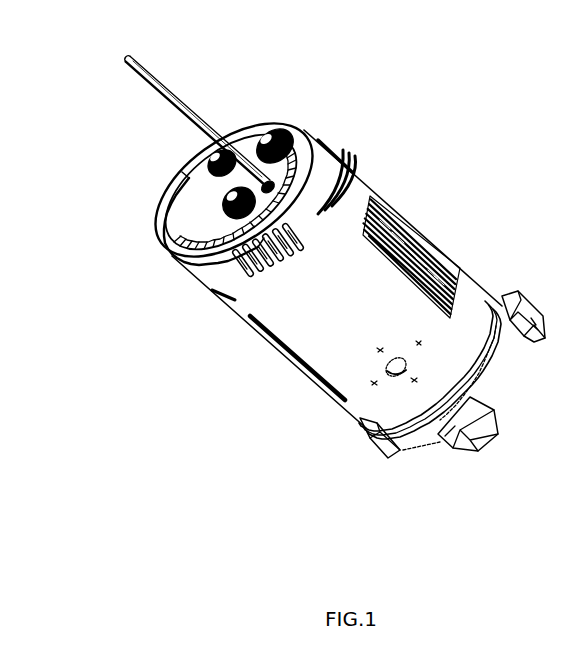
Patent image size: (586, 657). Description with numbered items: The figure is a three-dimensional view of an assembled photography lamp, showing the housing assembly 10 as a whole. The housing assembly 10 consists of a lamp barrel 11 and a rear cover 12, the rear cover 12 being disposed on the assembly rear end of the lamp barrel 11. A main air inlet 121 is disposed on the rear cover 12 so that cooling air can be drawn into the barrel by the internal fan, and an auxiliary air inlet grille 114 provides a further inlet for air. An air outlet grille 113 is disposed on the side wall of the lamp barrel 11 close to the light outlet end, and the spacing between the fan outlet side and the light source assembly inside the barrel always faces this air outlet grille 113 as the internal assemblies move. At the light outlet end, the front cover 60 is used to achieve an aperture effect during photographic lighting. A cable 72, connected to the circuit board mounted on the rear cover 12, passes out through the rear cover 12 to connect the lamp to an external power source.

The housing assembly 10 is at (57, 183).
The lamp barrel 11 is at (197, 279).
The rear cover 12 is at (200, 207).
The air outlet grille 113 is at (396, 204).
The auxiliary air inlet grille 114 is at (333, 150).
The main air inlet 121 is at (306, 137).
The cable 72 is at (173, 96).
The front cover 60 is at (415, 450).